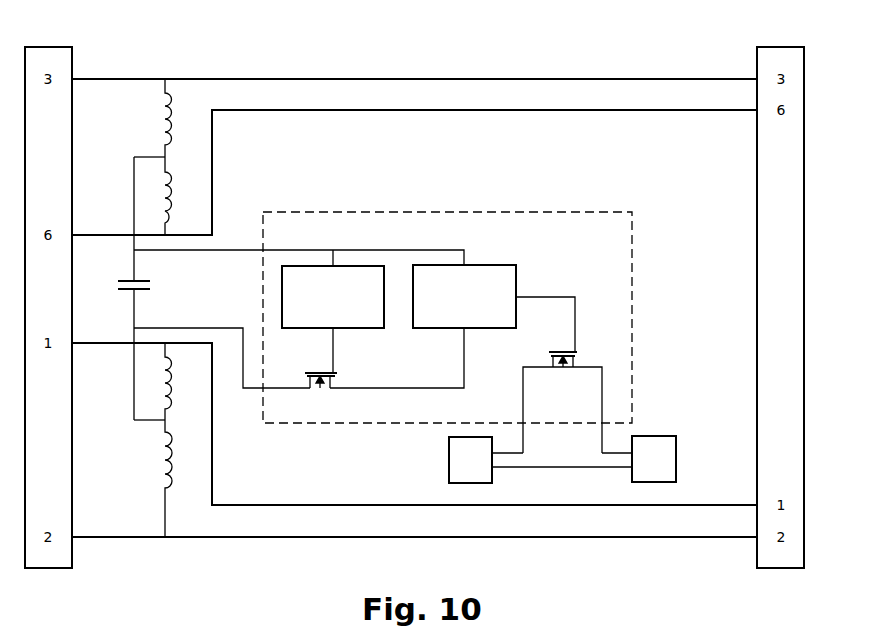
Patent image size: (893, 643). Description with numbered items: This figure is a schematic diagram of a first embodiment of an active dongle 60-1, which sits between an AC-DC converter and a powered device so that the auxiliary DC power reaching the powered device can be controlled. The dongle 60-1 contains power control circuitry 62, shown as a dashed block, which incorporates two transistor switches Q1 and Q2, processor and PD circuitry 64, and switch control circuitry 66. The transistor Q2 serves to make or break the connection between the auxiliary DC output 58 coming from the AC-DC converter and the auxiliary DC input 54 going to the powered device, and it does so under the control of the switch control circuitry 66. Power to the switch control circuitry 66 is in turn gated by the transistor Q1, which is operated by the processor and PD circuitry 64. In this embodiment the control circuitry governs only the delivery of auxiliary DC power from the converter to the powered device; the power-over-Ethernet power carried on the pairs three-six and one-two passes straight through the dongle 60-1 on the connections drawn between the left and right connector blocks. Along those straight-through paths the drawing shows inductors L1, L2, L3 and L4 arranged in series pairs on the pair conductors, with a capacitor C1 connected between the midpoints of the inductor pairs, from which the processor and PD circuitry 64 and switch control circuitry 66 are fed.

The power control circuitry 62 is at (447, 212).
The processor and PD circuitry 64 is at (333, 297).
The switch control circuitry 66 is at (464, 296).
The auxiliary DC output 58 is at (470, 460).
The auxiliary DC input 54 is at (654, 459).
The active dongle 60-1 is at (248, 578).
The transistor Q1 is at (308, 377).
The transistor Q2 is at (559, 375).
The inductor L1 is at (178, 118).
The inductor L2 is at (178, 196).
The inductor L3 is at (178, 381).
The inductor L4 is at (178, 478).
The capacitor C1 is at (146, 288).